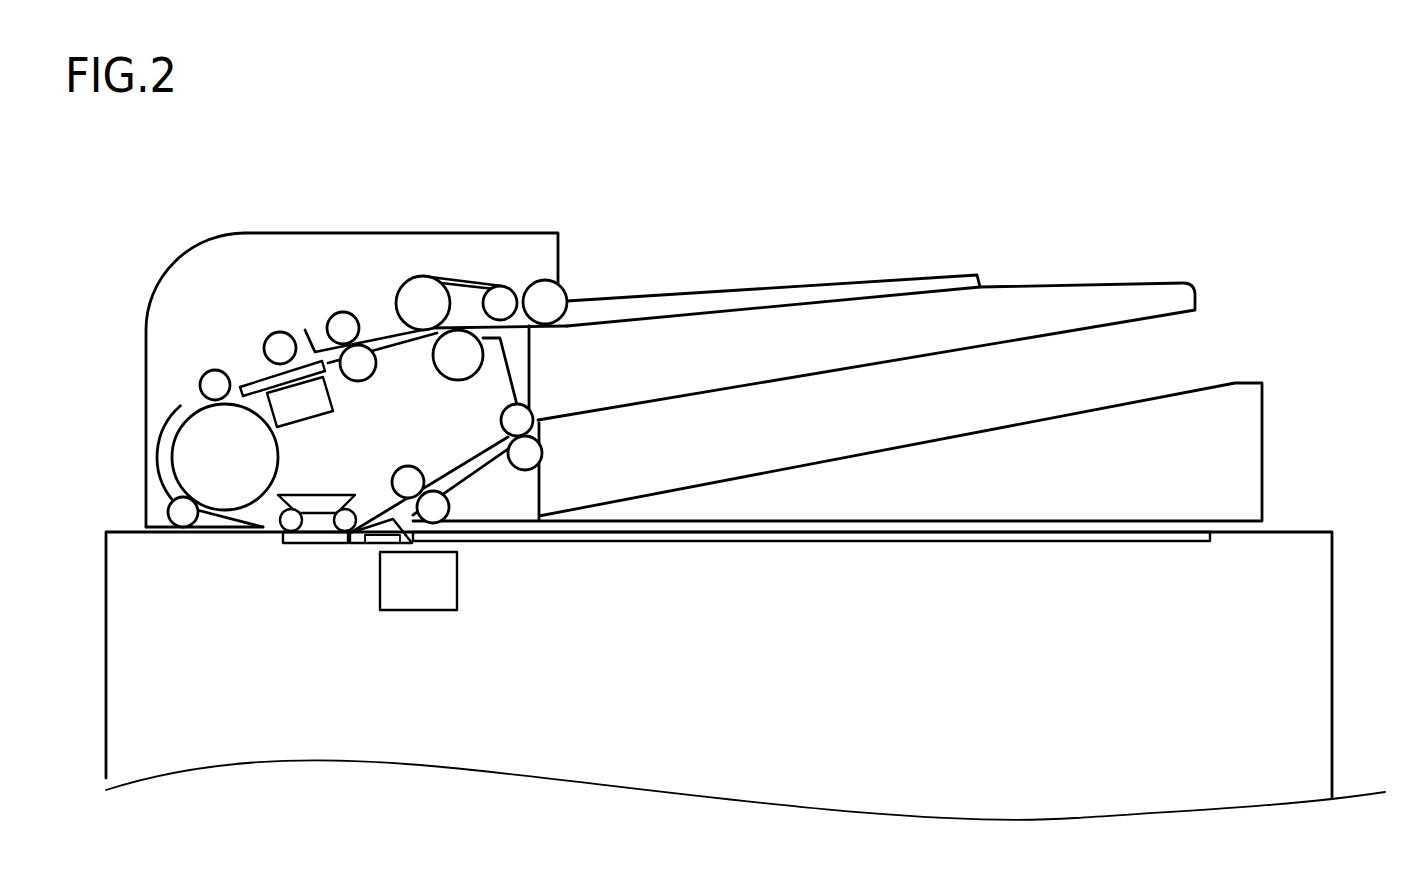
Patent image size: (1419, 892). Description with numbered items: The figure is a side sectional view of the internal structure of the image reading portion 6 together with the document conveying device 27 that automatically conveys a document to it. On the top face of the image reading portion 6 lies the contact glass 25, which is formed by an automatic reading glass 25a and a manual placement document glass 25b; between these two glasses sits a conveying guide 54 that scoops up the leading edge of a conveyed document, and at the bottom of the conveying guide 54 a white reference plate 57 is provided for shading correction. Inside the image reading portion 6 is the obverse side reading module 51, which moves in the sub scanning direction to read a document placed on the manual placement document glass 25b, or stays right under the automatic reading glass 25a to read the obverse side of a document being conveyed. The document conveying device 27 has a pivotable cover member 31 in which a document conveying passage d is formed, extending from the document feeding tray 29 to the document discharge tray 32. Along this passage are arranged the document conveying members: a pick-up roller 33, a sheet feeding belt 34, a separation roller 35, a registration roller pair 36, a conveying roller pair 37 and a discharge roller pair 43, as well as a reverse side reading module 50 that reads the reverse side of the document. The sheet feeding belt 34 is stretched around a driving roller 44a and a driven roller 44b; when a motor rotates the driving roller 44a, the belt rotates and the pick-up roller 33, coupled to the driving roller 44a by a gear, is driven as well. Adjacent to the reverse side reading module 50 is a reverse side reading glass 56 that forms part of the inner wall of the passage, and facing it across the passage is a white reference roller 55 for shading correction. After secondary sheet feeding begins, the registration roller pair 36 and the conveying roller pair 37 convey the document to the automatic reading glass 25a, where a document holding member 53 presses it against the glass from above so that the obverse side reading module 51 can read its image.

The image reading portion 6 is at (1337, 603).
The contact glass 25 is at (712, 580).
The automatic reading glass 25a is at (307, 545).
The manual placement document glass 25b is at (795, 543).
The document conveying device 27 is at (771, 227).
The document feeding tray 29 is at (1112, 285).
The cover member 31 is at (222, 250).
The document discharge tray 32 is at (948, 438).
The pick-up roller 33 is at (567, 295).
The sheet feeding belt 34 is at (432, 261).
The separation roller 35 is at (458, 368).
The registration roller pair 36 is at (343, 329).
The conveying roller pair 37 is at (438, 508).
The discharge roller pair 43 is at (536, 456).
The driving roller 44a is at (423, 297).
The driven roller 44b is at (503, 300).
The reverse side reading module 50 is at (320, 398).
The obverse side reading module 51 is at (413, 597).
The document holding member 53 is at (317, 503).
The conveying guide 54 is at (368, 522).
The white reference roller 55 is at (279, 346).
The reverse side reading glass 56 is at (240, 385).
The white reference plate 57 is at (377, 545).
The document conveying passage d is at (181, 418).